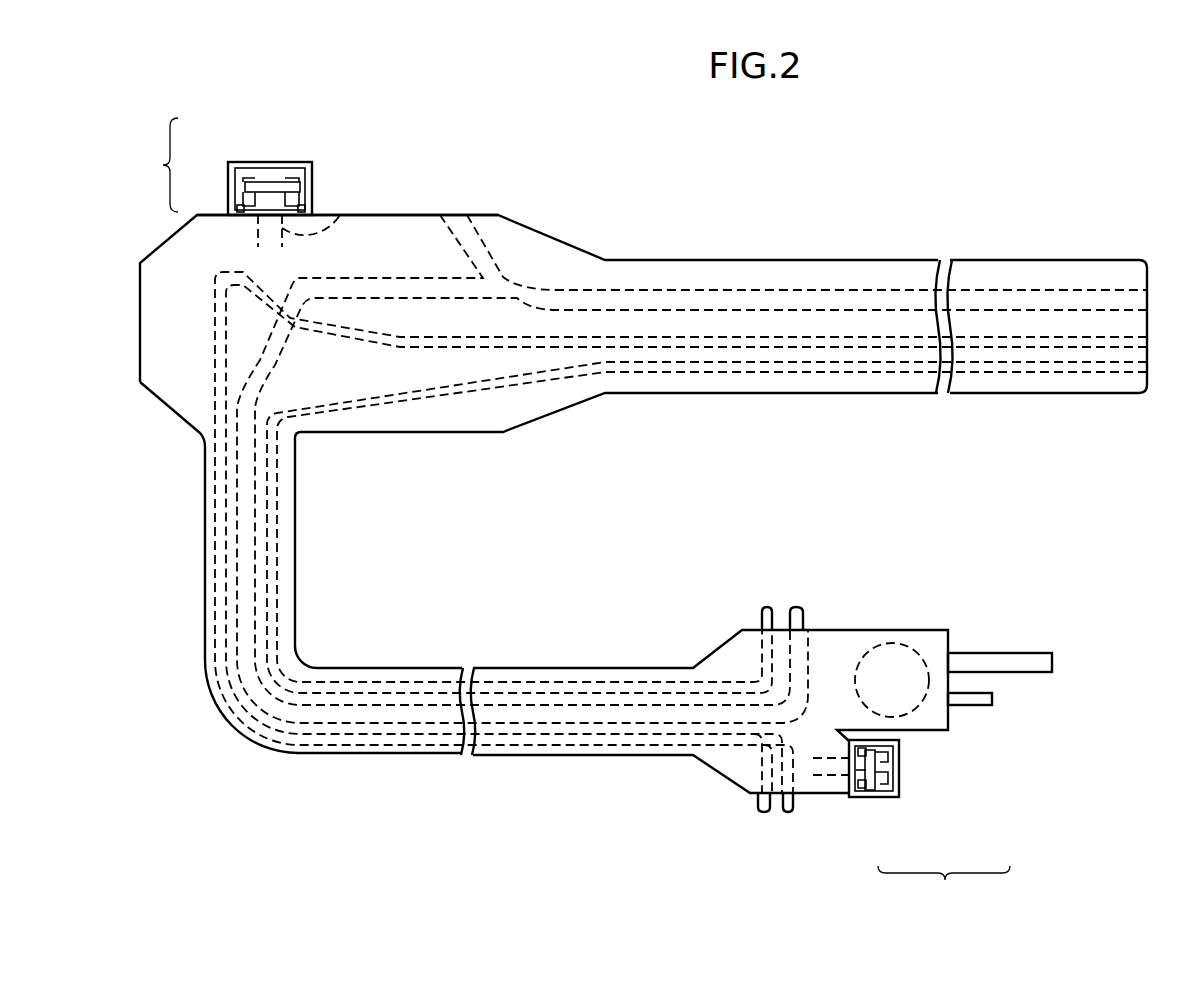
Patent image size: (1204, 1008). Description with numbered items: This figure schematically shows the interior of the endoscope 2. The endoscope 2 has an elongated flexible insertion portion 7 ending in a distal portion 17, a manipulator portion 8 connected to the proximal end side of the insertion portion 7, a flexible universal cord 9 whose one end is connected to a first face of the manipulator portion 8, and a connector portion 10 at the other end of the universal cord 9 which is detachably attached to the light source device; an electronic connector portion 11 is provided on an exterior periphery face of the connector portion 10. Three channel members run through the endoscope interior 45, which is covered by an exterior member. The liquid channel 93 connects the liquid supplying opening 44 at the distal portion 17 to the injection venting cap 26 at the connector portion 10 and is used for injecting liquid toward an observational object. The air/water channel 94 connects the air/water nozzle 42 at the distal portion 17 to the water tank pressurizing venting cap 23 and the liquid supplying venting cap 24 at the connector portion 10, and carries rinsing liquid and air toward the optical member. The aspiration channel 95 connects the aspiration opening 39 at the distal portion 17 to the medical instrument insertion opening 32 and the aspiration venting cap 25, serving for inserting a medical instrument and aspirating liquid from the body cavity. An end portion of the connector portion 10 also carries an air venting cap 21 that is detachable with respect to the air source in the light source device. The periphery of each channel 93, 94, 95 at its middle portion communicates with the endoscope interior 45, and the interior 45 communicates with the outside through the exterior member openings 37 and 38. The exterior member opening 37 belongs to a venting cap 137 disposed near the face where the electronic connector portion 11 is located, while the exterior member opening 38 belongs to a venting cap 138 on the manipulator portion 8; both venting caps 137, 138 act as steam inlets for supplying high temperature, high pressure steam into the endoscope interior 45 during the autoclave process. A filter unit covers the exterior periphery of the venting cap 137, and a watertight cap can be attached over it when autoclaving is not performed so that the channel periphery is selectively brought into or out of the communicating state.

The endoscope 2 is at (872, 186).
The insertion portion 7 is at (907, 255).
The manipulator portion 8 is at (398, 438).
The universal cord 9 is at (533, 662).
The connector portion 10 is at (950, 635).
The electronic connector portion 11 is at (912, 650).
The distal portion 17 is at (1115, 262).
The air venting cap 21 is at (985, 708).
The water tank pressurizing venting cap 23 is at (764, 812).
The liquid supplying venting cap 24 is at (788, 812).
The aspiration venting cap 25 is at (805, 612).
The injection venting cap 26 is at (762, 610).
The medical instrument insertion opening 32 is at (455, 212).
The exterior member opening 37 is at (820, 768).
The exterior member opening 38 is at (344, 207).
The aspiration opening 39 is at (1147, 298).
The air/water nozzle 42 is at (1147, 341).
The liquid supplying opening 44 is at (1147, 366).
The endoscope interior 45 is at (340, 385).
The liquid channel 93 is at (468, 392).
The air/water channel 94 is at (835, 350).
The aspiration channel 95 is at (820, 288).
The venting cap 137 is at (862, 800).
The venting cap 138 is at (298, 195).